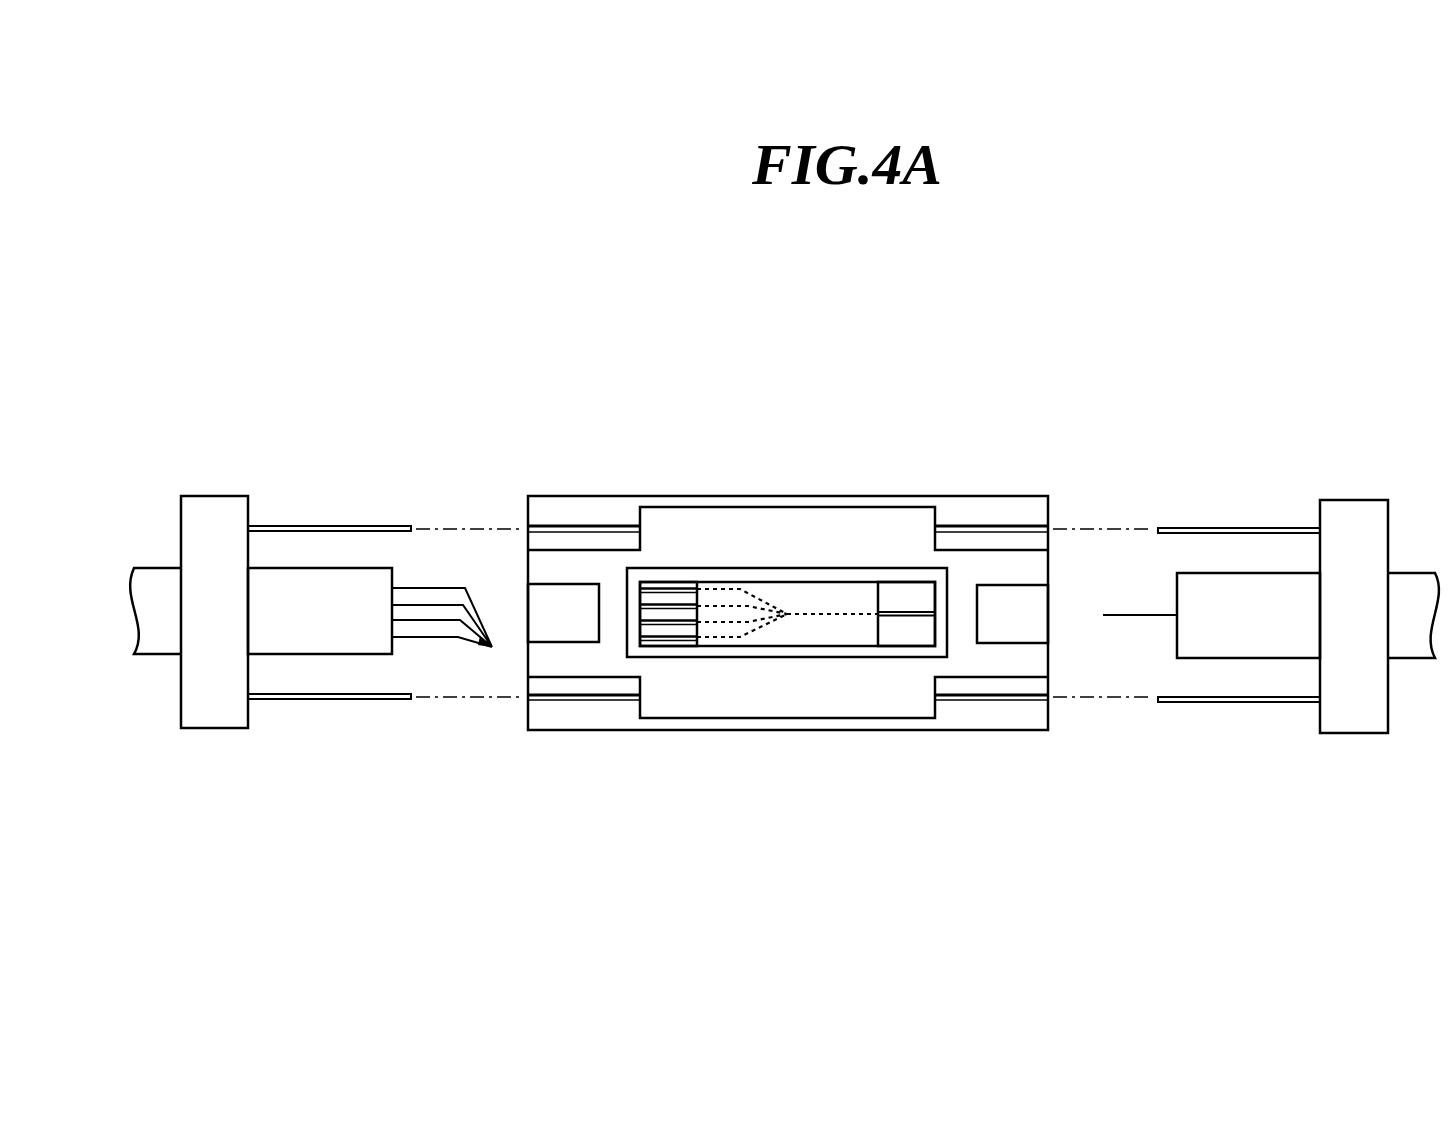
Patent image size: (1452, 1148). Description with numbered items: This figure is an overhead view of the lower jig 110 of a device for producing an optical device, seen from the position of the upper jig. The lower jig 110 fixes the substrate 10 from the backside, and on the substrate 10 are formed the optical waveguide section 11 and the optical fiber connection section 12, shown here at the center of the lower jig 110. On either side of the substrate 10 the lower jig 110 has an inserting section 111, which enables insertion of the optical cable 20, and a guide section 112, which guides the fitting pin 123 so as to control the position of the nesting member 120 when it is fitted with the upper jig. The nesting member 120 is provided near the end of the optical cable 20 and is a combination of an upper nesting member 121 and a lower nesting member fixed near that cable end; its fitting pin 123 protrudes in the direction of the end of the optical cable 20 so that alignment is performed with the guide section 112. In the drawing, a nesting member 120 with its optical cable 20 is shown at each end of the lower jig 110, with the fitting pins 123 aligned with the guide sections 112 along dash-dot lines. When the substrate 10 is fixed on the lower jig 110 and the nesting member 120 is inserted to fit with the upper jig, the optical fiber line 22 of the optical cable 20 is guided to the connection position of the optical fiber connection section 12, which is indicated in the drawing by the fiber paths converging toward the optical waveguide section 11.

The substrate 10 is at (787, 619).
The optical waveguide section 11 is at (802, 628).
The optical fiber connection section 12 is at (675, 645).
The optical cable 20 is at (305, 645).
The optical fiber line 22 is at (784, 638).
The lower jig 110 is at (793, 605).
The inserting section 111 is at (555, 612).
The guide section 112 is at (560, 525).
The nesting member 120 is at (784, 597).
The upper nesting member 121 is at (210, 720).
The fitting pin 123 is at (353, 528).